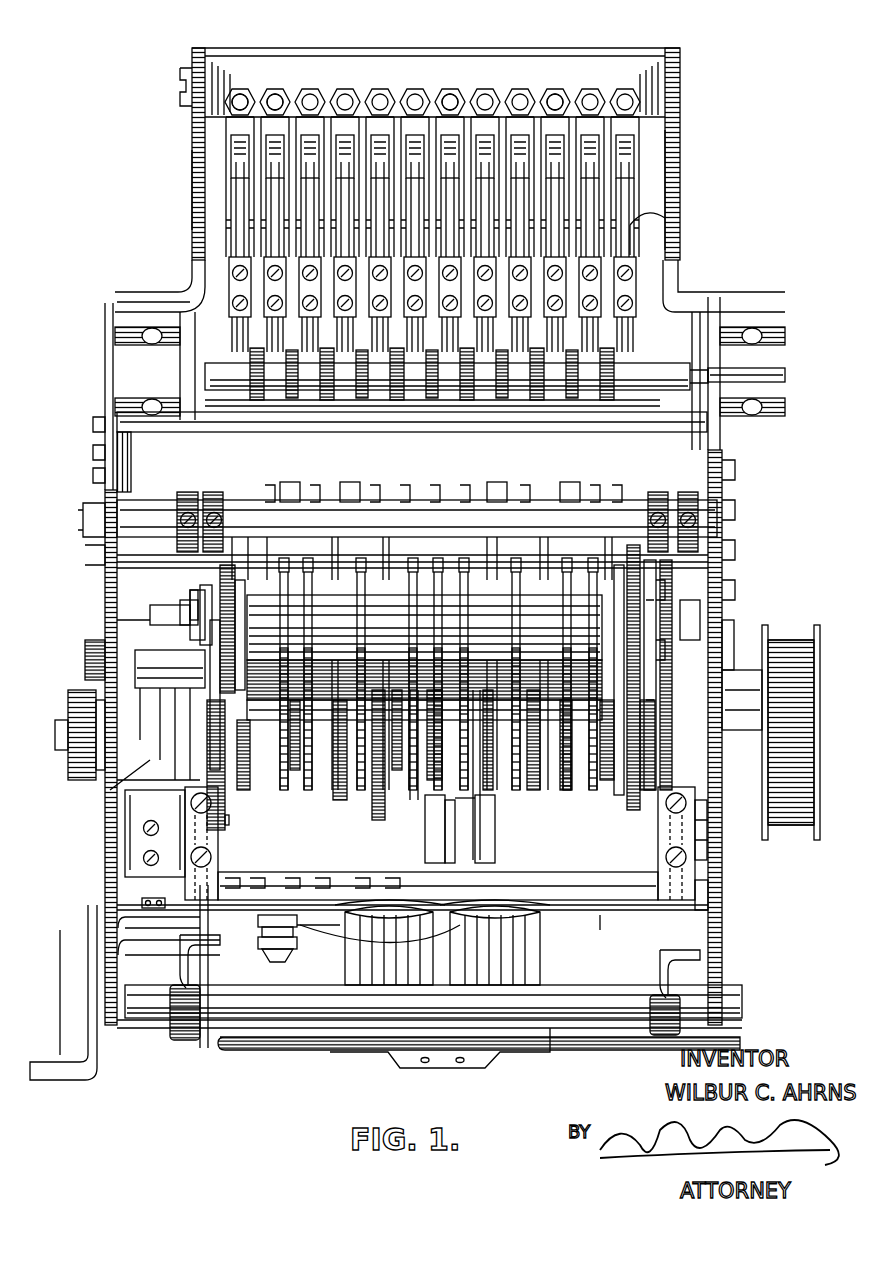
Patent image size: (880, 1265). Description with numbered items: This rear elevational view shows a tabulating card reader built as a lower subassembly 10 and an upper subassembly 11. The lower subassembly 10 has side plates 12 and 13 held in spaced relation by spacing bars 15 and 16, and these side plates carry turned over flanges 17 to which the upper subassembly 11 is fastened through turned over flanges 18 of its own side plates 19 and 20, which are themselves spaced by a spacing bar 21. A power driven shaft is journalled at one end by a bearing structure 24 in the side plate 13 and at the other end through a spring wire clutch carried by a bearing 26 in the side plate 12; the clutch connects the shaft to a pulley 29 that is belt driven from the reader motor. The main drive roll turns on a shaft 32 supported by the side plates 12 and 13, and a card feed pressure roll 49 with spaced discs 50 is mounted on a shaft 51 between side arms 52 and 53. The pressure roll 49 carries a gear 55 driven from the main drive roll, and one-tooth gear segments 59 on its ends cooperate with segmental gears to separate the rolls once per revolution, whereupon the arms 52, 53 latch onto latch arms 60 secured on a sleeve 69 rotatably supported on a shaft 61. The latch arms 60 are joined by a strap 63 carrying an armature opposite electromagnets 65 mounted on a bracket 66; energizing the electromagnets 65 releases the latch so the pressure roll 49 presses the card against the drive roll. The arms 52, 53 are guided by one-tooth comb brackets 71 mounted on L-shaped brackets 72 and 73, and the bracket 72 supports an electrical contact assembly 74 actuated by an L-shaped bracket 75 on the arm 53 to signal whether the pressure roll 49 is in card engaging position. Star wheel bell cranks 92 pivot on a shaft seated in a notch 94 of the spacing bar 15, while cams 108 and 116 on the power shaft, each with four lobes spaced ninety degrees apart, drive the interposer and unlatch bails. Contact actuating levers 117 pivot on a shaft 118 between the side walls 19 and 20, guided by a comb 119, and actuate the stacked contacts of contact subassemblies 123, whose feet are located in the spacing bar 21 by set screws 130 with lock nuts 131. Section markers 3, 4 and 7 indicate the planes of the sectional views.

The section line 3- 3 is at (215, 305).
The section line 4- 4 is at (535, 328).
The section line 7- 7 is at (235, 648).
The lower subassembly 10 is at (755, 506).
The upper subassembly 11 is at (736, 186).
The side plate 12 is at (723, 585).
The side plate 13 is at (100, 585).
The spacing bar 15 is at (712, 448).
The spacing bar 16 is at (605, 858).
The turned over flanges 17 is at (135, 345).
The turned over flanges 18 is at (130, 292).
The side plate 19 is at (680, 148).
The side plate 20 is at (200, 178).
The spacing bar 21 is at (378, 60).
The bearing structure 24 is at (78, 700).
The bearing 26 is at (742, 672).
The pulley 29 is at (790, 820).
The shaft 32 is at (150, 598).
The card feed pressure roll 49 is at (595, 603).
The spaced discs 50 is at (470, 600).
The shaft 51 is at (430, 500).
The side arm 52 is at (722, 905).
The side arm 53 is at (205, 910).
The gear 55 is at (632, 625).
The one-tooth gear segments 59 is at (235, 610).
The latch arms 60 is at (182, 965).
The shaft 61 is at (145, 1040).
The strap 63 is at (532, 1045).
The electromagnets 65 is at (360, 963).
The bracket 66 is at (590, 918).
The sleeve 69 is at (312, 1010).
The one-tooth comb brackets 71 is at (218, 832).
The L-shaped bracket 72 is at (710, 858).
The L-shaped bracket 73 is at (135, 842).
The electrical contact assembly 74 is at (110, 788).
The L-shaped bracket 75 is at (150, 662).
The bell cranks 92 is at (500, 482).
The notch 94 is at (572, 482).
The cam 108 is at (425, 840).
The cam 116 is at (495, 840).
The contact actuating levers 117 is at (270, 405).
The shaft 118 is at (640, 386).
The comb 119 is at (670, 220).
The contact subassembly 123 is at (557, 100).
The set screw 130 is at (240, 95).
The lock nut 131 is at (450, 100).